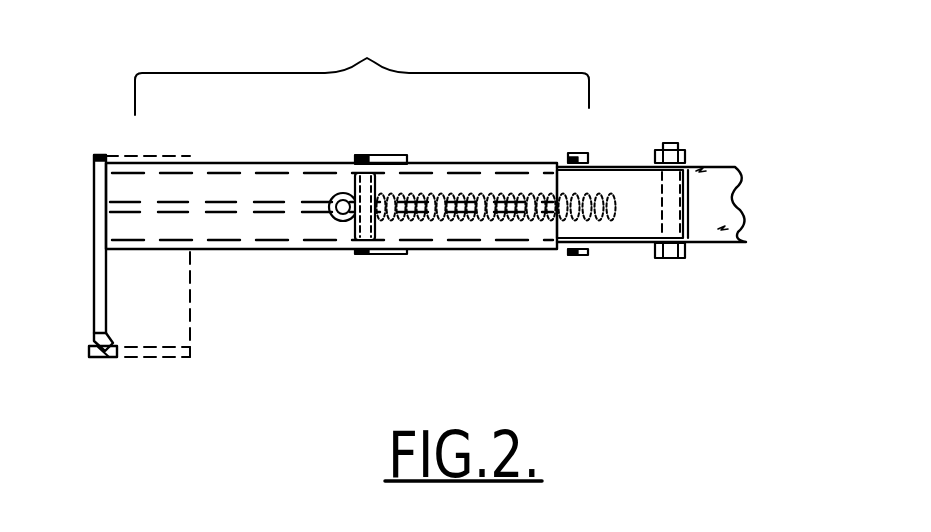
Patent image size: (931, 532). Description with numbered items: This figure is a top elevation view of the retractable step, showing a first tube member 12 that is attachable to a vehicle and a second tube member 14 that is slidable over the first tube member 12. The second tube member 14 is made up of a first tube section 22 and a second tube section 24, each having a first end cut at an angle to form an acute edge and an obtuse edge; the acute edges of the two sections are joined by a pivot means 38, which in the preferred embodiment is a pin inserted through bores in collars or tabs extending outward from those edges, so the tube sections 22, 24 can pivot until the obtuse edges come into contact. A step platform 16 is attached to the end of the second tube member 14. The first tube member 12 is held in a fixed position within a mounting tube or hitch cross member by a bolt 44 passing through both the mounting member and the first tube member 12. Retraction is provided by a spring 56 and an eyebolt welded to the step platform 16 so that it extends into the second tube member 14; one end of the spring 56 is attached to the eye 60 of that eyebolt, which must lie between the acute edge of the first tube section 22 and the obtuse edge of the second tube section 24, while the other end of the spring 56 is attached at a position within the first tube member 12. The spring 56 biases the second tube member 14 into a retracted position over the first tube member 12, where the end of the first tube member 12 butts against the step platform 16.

The first tube member 12 is at (637, 190).
The second tube member 14 is at (362, 57).
The step platform 16 is at (93, 273).
The first tube section 22 is at (485, 163).
The second tube section 24 is at (281, 163).
The pivot means 38 is at (383, 146).
The bolt 44 is at (688, 152).
The spring 56 is at (437, 222).
The eye 60 is at (343, 223).